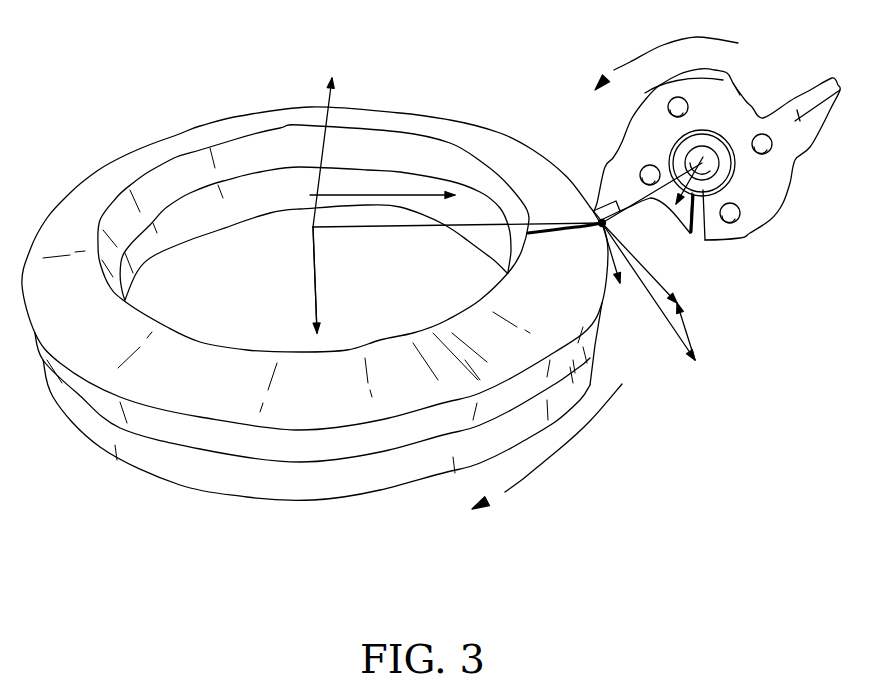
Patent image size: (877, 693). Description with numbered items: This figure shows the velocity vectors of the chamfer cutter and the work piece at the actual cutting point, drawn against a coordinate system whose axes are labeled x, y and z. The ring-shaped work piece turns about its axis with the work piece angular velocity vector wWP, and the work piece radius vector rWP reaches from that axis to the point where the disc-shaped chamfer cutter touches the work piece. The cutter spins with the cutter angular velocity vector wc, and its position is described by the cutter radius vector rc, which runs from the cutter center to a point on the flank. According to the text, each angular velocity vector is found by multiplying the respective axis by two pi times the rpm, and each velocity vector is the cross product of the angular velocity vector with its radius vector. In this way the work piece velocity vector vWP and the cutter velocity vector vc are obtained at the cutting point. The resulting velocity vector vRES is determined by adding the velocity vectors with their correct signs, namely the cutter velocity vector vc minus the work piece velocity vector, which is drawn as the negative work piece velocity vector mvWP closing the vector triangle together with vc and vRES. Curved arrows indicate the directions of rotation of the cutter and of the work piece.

The x axis of workpiece coordinate system x is at (331, 149).
The y axis of workpiece coordinate system y is at (387, 185).
The z axis of workpiece coordinate system z is at (322, 280).
The work piece radius vector rWP is at (421, 236).
The work piece angular velocity vector wWP is at (273, 304).
The cutter radius vector rc is at (619, 176).
The cutter angular velocity vector wc is at (660, 206).
The work piece velocity vector vWP is at (571, 257).
The resulting velocity vector vRES is at (664, 249).
The cutter velocity vector vc is at (652, 313).
The negative work piece velocity vector mvWP is at (714, 322).